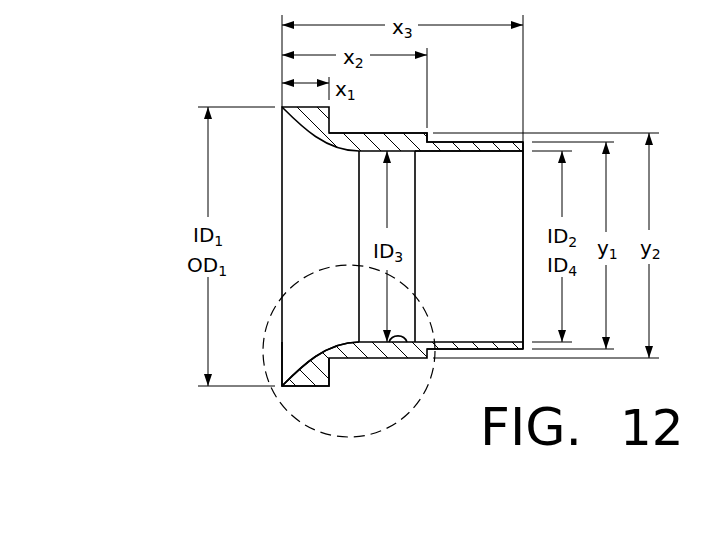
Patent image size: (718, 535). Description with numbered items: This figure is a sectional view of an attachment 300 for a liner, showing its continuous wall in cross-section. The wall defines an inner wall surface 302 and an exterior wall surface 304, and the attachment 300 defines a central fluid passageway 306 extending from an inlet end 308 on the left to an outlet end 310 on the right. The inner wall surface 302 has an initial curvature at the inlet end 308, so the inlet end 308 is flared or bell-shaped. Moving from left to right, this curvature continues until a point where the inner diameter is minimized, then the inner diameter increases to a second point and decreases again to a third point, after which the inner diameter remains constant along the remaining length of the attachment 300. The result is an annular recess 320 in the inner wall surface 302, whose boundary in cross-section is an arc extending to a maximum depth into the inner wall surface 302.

The attachment 300 is at (245, 58).
The inner wall surface 302 is at (507, 151).
The exterior wall surface 304 is at (493, 144).
The central fluid passageway 306 is at (534, 200).
The inlet end 308 is at (281, 386).
The outlet end 310 is at (532, 343).
The annular recess 320 is at (400, 344).